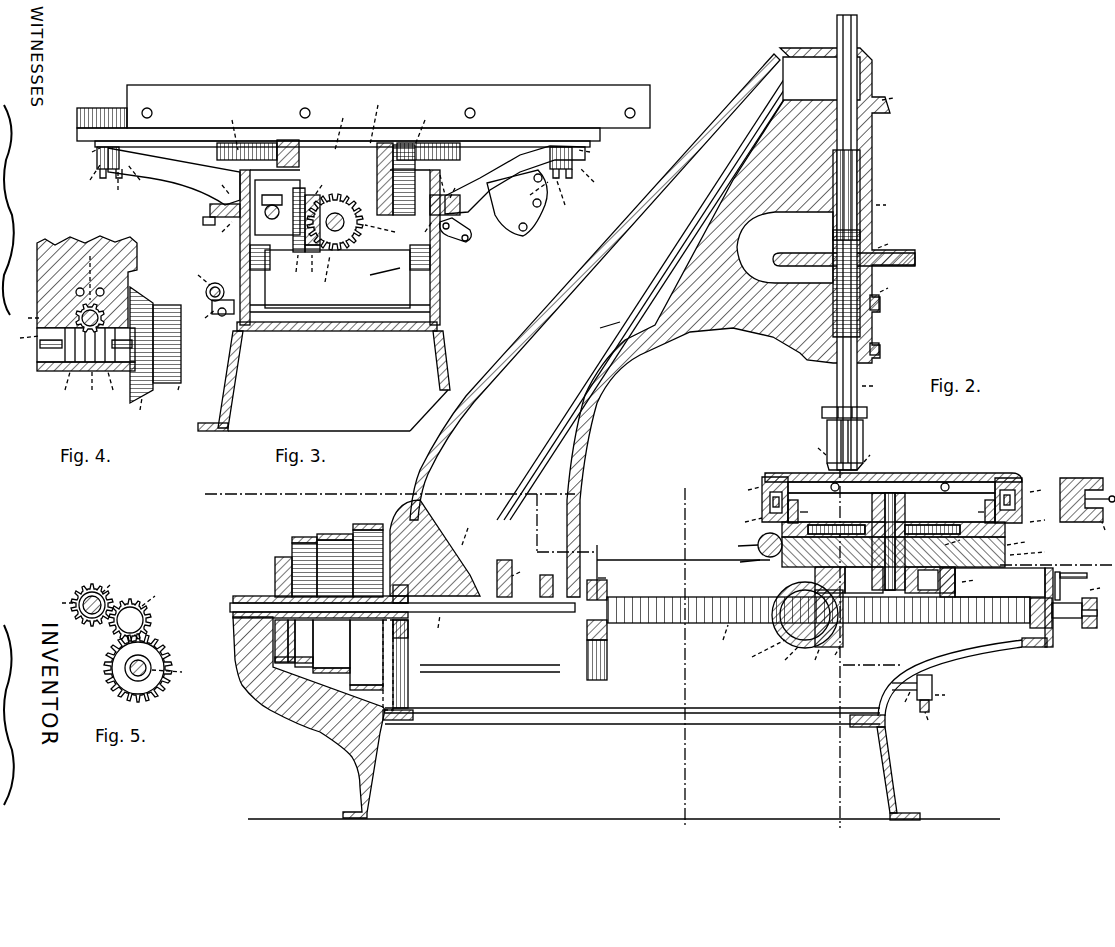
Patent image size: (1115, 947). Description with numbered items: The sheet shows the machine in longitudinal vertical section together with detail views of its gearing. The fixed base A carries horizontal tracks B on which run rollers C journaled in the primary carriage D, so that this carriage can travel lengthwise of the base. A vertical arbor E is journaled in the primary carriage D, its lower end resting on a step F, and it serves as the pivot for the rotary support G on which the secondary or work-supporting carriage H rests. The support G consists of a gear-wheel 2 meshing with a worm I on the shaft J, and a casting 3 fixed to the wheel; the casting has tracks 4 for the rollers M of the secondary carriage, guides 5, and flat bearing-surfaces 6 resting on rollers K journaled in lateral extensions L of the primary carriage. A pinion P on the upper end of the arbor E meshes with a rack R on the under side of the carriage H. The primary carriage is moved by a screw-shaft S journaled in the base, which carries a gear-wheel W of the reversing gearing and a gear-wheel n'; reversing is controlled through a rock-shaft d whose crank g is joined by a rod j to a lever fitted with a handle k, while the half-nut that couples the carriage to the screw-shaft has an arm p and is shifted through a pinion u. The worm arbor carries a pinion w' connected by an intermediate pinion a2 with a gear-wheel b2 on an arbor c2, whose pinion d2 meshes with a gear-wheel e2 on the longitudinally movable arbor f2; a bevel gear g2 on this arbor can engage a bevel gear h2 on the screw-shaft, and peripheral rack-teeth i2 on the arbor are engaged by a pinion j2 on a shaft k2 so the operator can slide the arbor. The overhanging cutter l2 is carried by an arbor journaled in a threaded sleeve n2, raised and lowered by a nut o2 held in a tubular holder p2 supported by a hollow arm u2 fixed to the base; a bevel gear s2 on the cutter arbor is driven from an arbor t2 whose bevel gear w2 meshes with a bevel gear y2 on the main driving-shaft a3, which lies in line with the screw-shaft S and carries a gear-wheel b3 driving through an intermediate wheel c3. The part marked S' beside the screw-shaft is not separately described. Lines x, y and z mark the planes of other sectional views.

In FIG. 3, the secondary or work-supporting carriage H is at (363, 107).
In FIG. 2, the secondary or work-supporting carriage H is at (893, 468).
In FIG. 3, the gear-wheel 2 is at (231, 127).
In FIG. 3, the worm I is at (341, 125).
In FIG. 2, the worm I is at (755, 545).
In FIG. 3, the shaft J is at (375, 115).
In FIG. 3, the pinion w' is at (338, 135).
In FIG. 3, the flat bearing-surfaces 6 is at (339, 156).
In FIG. 3, the rollers K is at (322, 191).
In FIG. 3, the lateral extensions L is at (355, 186).
In FIG. 3, the rollers C is at (346, 194).
In FIG. 3, the horizontal longitudinal tracks or flanges B is at (324, 300).
In FIG. 3, the pinion d2 is at (318, 206).
In FIG. 3, the arbor c2 is at (396, 179).
In FIG. 3, the intermediate pinion a2 is at (444, 185).
In FIG. 3, the gear-wheel b2 is at (352, 222).
In FIG. 3, the rock-shaft d is at (205, 281).
In FIG. 2, the rock-shaft d is at (912, 698).
In FIG. 3, the crank g is at (212, 313).
In FIG. 2, the crank g is at (937, 703).
In FIG. 3, the bevel gear-wheel g2 is at (295, 238).
In FIG. 4, the bevel gear-wheel g2 is at (141, 358).
In FIG. 2, the bevel gear-wheel g2 is at (809, 632).
In FIG. 3, the gear-wheel e2 is at (312, 265).
In FIG. 4, the gear-wheel e2 is at (169, 354).
In FIG. 2, the gear-wheel e2 is at (790, 627).
In FIG. 3, the bevel gear-wheel h2 is at (328, 277).
In FIG. 2, the bevel gear-wheel h2 is at (813, 661).
In FIG. 3, the fixed supporting-frame or base A is at (352, 277).
In FIG. 2, the fixed supporting-frame or base A is at (640, 682).
In FIG. 3, the screw-shaft S is at (385, 267).
In FIG. 4, the shaft k2 is at (75, 282).
In FIG. 4, the pinion j2 is at (69, 349).
In FIG. 4, the overhanging cutter l2 is at (62, 390).
In FIG. 2, the overhanging cutter l2 is at (836, 438).
In FIG. 4, the peripheral rack-teeth i2 is at (89, 389).
In FIG. 4, the longitudinally-movable arbor f2 is at (99, 332).
In FIG. 5, the main driving-shaft a3 is at (79, 605).
In FIG. 5, the gear-wheel b3 is at (113, 579).
In FIG. 2, the gear-wheel b3 is at (408, 645).
In FIG. 5, the intermediate wheel c3 is at (140, 611).
In FIG. 2, the intermediate wheel c3 is at (402, 623).
In FIG. 5, the pinion u is at (148, 668).
In FIG. 2, the pinion u is at (396, 598).
In FIG. 2, the section line x x is at (381, 494).
In FIG. 2, the section line y y is at (684, 659).
In FIG. 2, the section line z z is at (854, 649).
In FIG. 2, the bevel-gear w2 is at (435, 548).
In FIG. 2, the bevel-gear y2 is at (525, 578).
In FIG. 2, the gear-wheel W is at (597, 620).
In FIG. 2, the worm shaft S' is at (818, 628).
In FIG. 2, the arbor t2 is at (650, 295).
In FIG. 2, the hollow arm u2 is at (598, 274).
In FIG. 2, the bevel gear-wheel s2 is at (741, 322).
In FIG. 2, the nut o2 is at (844, 247).
In FIG. 2, the fixed tubular holder p2 is at (887, 274).
In FIG. 2, the sleeve n2 is at (862, 242).
In FIG. 2, the rack R is at (872, 450).
In FIG. 2, the rollers M is at (921, 500).
In FIG. 2, the guides 5 is at (891, 511).
In FIG. 2, the vertical arbor E is at (891, 502).
In FIG. 2, the pinion P is at (900, 541).
In FIG. 2, the primary supporting-carriage D is at (891, 556).
In FIG. 2, the tracks 4 is at (889, 520).
In FIG. 2, the casting 3 is at (893, 534).
In FIG. 2, the rotary support G is at (911, 549).
In FIG. 2, the step or offset F is at (934, 607).
In FIG. 2, the handle k is at (1070, 600).
In FIG. 2, the arm p is at (1104, 535).
In FIG. 2, the gear-wheel n' is at (837, 659).
In FIG. 2, the rod j is at (930, 724).